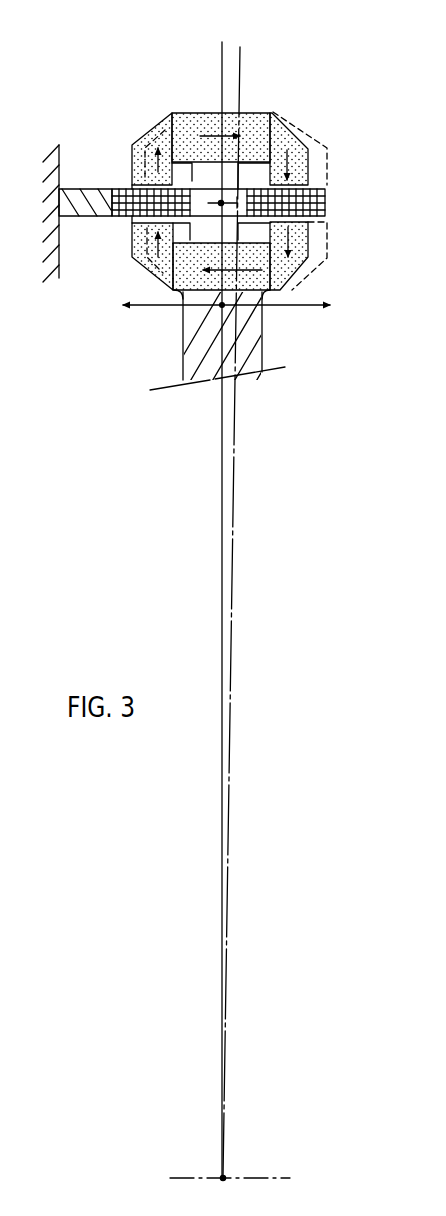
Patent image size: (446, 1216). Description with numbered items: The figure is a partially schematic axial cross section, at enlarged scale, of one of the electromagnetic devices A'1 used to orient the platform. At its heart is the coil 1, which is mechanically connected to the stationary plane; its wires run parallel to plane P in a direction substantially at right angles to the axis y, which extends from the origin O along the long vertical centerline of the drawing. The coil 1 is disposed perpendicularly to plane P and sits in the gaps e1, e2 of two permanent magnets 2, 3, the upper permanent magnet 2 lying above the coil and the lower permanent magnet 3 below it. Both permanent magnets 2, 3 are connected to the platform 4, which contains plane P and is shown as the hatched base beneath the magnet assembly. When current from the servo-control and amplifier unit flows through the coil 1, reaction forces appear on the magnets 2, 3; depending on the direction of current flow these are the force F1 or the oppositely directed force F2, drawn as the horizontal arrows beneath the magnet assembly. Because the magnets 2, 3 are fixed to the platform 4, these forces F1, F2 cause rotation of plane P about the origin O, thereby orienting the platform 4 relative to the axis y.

The coil 1 is at (325, 205).
The permanent magnet 2 is at (222, 139).
The permanent magnet 3 is at (300, 264).
The platform 4 is at (248, 352).
The electromagnetic device A'1 is at (145, 137).
The gap of permanent magnet e1 is at (131, 187).
The gap of permanent magnet e2 is at (131, 223).
The plane P is at (217, 333).
The force F1 is at (287, 318).
The force F2 is at (163, 317).
The origin of axis O is at (221, 1176).
The axis y is at (218, 599).